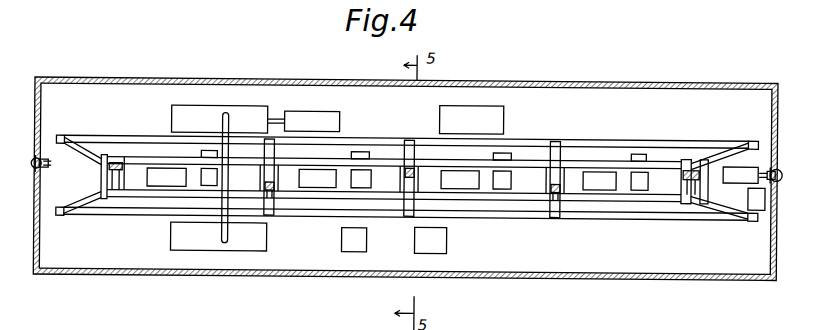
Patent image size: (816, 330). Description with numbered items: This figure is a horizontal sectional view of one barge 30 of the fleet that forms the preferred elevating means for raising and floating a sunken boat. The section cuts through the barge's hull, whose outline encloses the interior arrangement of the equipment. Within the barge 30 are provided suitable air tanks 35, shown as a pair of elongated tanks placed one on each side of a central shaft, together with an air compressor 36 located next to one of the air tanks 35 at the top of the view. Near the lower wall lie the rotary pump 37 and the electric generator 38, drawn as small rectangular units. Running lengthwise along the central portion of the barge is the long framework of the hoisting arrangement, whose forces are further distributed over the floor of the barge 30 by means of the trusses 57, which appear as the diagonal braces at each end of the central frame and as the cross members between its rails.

The barge 30 is at (696, 262).
The air tanks 35 is at (240, 106).
The air compressor 36 is at (303, 118).
The rotary pump 37 is at (435, 251).
The electric generator 38 is at (355, 249).
The trusses 57 is at (80, 170).